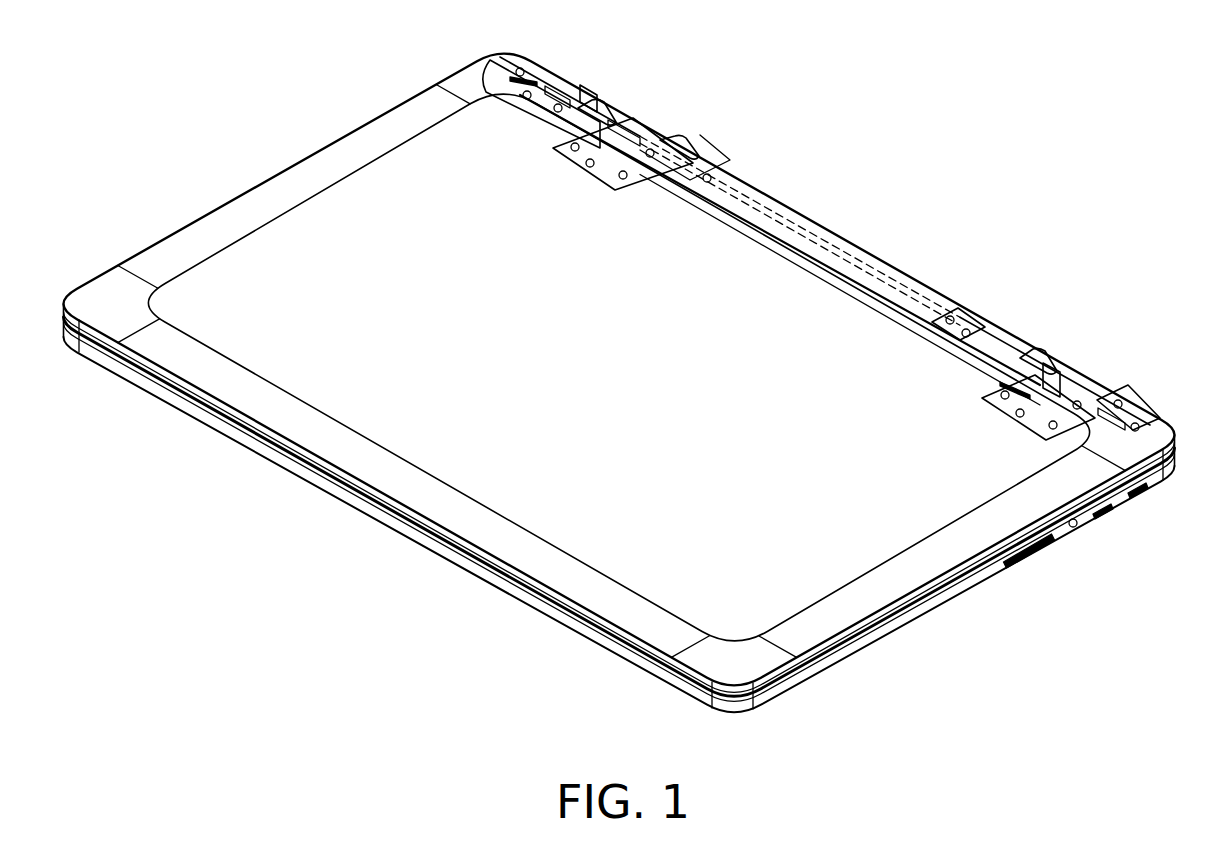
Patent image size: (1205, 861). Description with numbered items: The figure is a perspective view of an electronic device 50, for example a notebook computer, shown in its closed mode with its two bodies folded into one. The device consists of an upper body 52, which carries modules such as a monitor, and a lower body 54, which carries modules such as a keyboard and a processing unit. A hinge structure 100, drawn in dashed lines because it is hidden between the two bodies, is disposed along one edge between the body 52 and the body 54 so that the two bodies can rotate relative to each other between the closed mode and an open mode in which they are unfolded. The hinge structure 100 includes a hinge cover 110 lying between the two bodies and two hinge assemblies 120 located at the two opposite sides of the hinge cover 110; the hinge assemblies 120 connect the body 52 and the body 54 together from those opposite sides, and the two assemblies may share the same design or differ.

The hinge structure 100 is at (835, 154).
The hinge cover 110 is at (831, 250).
The hinge assemblies 120 is at (637, 123).
The body 52 is at (835, 623).
The body 54 is at (927, 608).
The electronic device 50 is at (1192, 751).